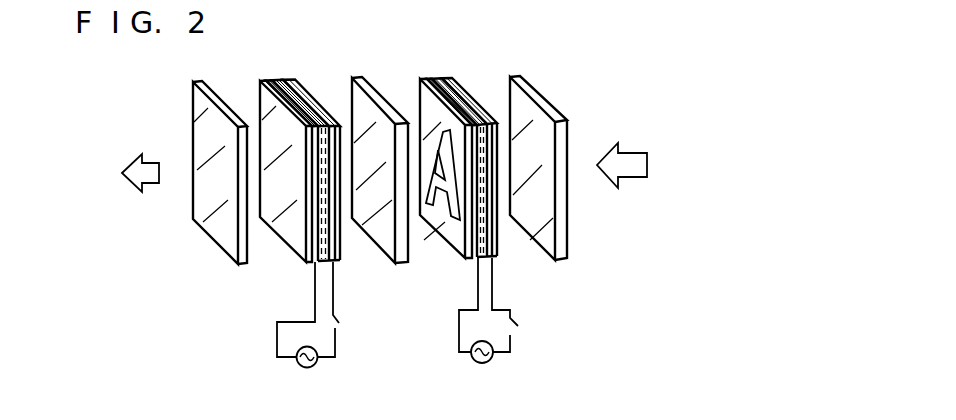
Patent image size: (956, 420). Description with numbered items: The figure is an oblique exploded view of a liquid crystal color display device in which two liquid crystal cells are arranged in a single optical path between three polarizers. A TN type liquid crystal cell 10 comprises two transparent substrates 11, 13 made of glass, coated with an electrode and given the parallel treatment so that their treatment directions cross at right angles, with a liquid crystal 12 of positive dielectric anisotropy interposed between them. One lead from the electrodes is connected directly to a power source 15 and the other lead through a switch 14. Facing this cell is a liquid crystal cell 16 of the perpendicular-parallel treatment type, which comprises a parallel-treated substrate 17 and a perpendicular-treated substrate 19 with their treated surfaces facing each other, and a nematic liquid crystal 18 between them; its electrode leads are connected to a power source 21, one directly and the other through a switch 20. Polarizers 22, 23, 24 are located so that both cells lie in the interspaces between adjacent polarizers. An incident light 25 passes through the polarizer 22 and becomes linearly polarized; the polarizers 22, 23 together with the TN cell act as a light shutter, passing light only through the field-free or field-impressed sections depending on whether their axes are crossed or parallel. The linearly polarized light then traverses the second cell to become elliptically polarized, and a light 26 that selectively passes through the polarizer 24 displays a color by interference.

The liquid crystal cell 10 is at (480, 95).
The transparent substrate 11 is at (453, 79).
The liquid crystal 12 is at (437, 79).
The transparent substrate 13 is at (423, 79).
The switch 14 is at (519, 325).
The power source 15 is at (493, 359).
The liquid crystal cell 16 is at (317, 92).
The substrate 17 is at (297, 79).
The nematic liquid crystal 18 is at (279, 80).
The substrate 19 is at (268, 80).
The switch 20 is at (340, 323).
The power source 21 is at (316, 365).
The polarizer 22 is at (540, 89).
The polarizer 23 is at (352, 79).
The polarizer 24 is at (191, 96).
The incident light 25 is at (630, 177).
The light 26 is at (137, 186).